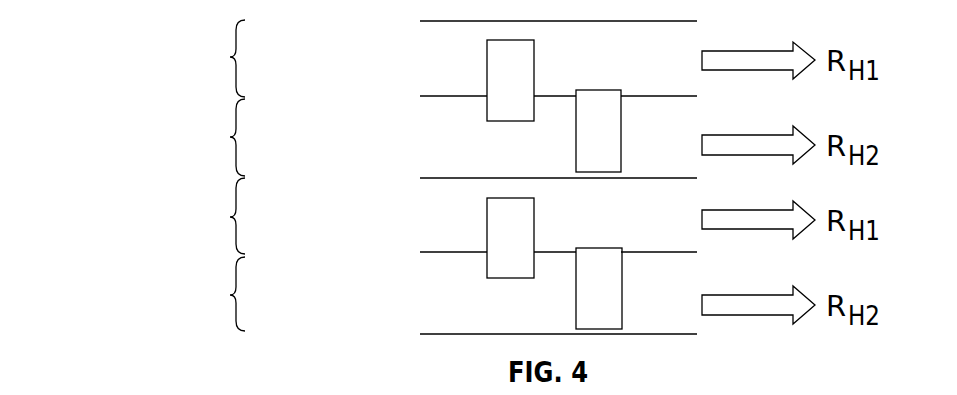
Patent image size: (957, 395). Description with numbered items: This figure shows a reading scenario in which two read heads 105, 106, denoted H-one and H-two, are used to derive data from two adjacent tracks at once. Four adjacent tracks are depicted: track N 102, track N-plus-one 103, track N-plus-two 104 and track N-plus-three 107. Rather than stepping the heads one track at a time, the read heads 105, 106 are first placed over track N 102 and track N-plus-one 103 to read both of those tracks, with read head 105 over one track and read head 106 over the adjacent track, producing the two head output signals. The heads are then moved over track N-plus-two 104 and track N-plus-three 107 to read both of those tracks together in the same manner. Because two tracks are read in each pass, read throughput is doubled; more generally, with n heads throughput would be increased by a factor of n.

The track N 102 is at (299, 58).
The track N+1 103 is at (299, 137).
The track N+2 104 is at (299, 216).
The track N+3 107 is at (299, 294).
The read head 105 is at (523, 62).
The read head 106 is at (608, 107).